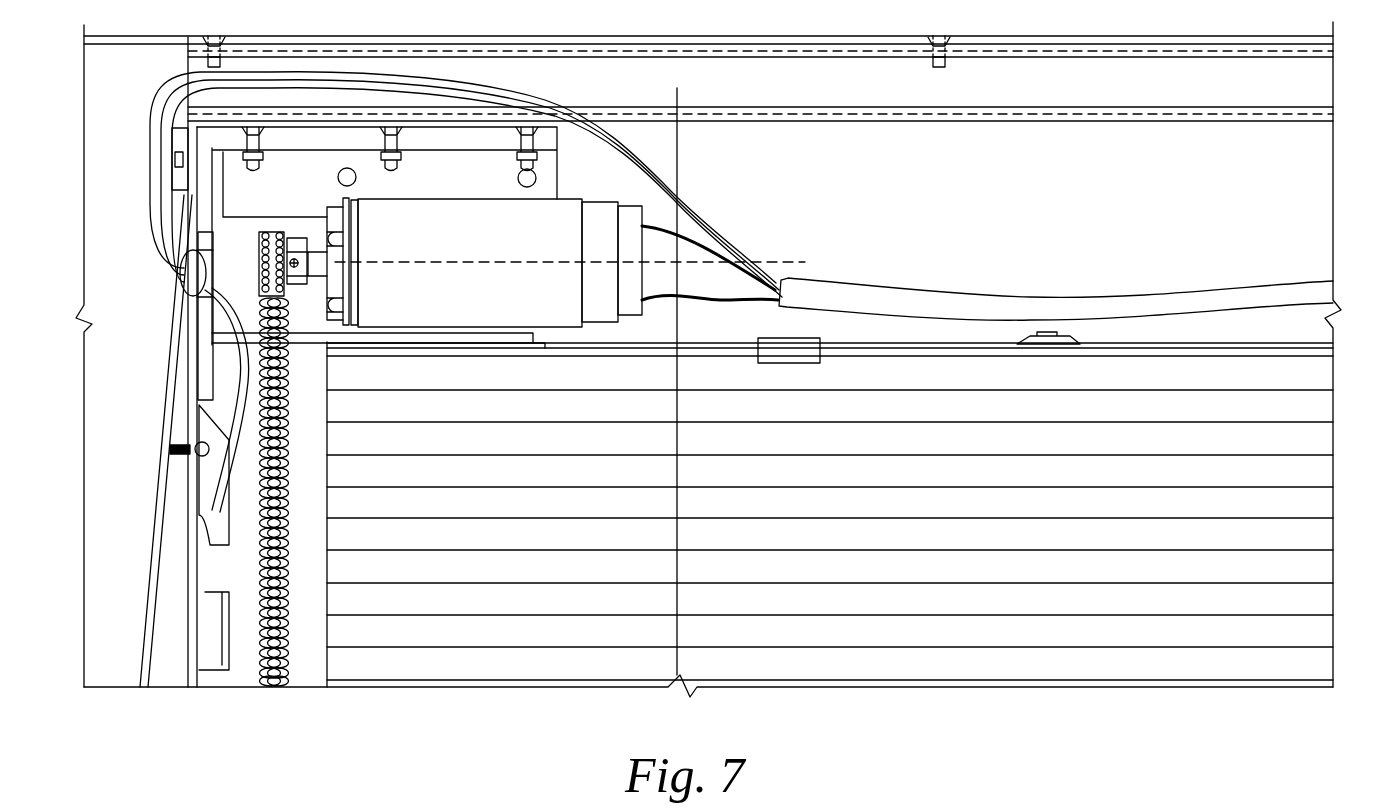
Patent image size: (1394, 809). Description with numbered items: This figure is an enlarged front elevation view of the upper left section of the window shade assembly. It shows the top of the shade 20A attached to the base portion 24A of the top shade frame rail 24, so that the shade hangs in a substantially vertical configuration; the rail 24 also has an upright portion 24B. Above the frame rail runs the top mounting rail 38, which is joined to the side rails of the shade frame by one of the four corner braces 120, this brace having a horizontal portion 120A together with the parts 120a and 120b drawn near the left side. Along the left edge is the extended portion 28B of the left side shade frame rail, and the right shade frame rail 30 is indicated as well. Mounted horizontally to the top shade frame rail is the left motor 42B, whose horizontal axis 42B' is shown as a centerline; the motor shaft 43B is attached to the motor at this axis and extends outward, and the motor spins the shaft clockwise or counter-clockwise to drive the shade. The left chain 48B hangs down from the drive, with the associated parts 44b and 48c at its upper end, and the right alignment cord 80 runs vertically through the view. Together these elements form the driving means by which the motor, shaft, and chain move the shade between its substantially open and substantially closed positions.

The top of the shade 20A is at (1268, 440).
The top shade frame rail 24 is at (1290, 165).
The base portion of the top shade frame rail 24A is at (1197, 343).
The upright portion of the top shade frame rail 24B is at (1120, 214).
The extended portion of the left side shade frame rail 28B is at (158, 517).
The right shade frame rail 30 is at (295, 258).
The top mounting rail 38 is at (790, 94).
The left motor 42B is at (566, 262).
The horizontal axis of the left motor 42B' is at (755, 240).
The motor shaft 43B is at (362, 222).
The spring rack 44b is at (262, 280).
The left chain 48B is at (290, 667).
The spring mount block 48c is at (288, 240).
The right alignment cord 80 is at (677, 147).
The corner brace 120 is at (207, 107).
The harness bracket 120a is at (184, 200).
The harness retainer 120b is at (203, 362).
The horizontal portion of the corner brace 120A is at (478, 187).